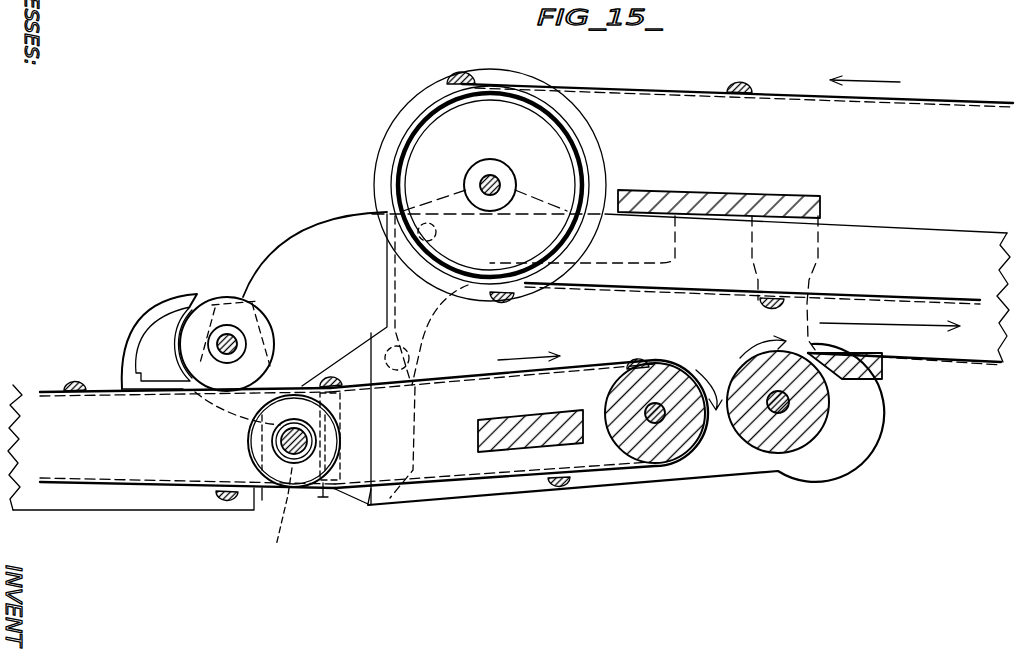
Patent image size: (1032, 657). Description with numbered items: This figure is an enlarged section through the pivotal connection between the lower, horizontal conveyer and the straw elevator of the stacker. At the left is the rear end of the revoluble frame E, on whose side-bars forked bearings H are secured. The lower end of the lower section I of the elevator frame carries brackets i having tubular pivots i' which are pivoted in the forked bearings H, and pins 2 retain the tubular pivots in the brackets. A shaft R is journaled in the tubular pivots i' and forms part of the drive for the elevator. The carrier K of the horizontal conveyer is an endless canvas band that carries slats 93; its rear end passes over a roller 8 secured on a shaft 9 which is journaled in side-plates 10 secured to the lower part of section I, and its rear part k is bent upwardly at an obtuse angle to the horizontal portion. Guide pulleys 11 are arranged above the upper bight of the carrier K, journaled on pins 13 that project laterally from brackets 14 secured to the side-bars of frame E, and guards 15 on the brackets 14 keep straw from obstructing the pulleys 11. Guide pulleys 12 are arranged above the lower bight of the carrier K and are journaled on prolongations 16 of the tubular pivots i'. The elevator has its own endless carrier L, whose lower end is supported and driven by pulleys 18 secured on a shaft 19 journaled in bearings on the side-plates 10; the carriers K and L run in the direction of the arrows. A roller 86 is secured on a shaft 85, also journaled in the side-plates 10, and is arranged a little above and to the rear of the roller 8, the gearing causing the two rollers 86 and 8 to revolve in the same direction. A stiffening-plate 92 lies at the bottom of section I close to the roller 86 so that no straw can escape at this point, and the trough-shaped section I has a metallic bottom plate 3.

The guard 15 is at (196, 297).
The guide pulley 11 is at (227, 297).
The bracket 14 is at (236, 322).
The pin 13 is at (232, 346).
The carrier K is at (57, 389).
The guide pulley 12 is at (252, 442).
The prolongation 16 is at (280, 484).
The tubular pivot i' is at (284, 514).
The shaft R is at (290, 472).
The pin 2 is at (320, 490).
The forked bearing H is at (337, 490).
The bracket i is at (378, 516).
The rear part of carrier k is at (490, 477).
The shaft 9 is at (652, 420).
The roller 8 is at (668, 450).
The side-plate 10 is at (739, 462).
The shaft 85 is at (782, 410).
The roller 86 is at (808, 410).
The stiffening-plate 92 is at (866, 380).
The bottom plate 3 is at (950, 360).
The slat 93 is at (640, 364).
The pulley 18 is at (570, 162).
The shaft 19 is at (498, 181).
The carrier L is at (664, 78).
The lower section I is at (892, 244).
The revoluble frame E is at (128, 511).